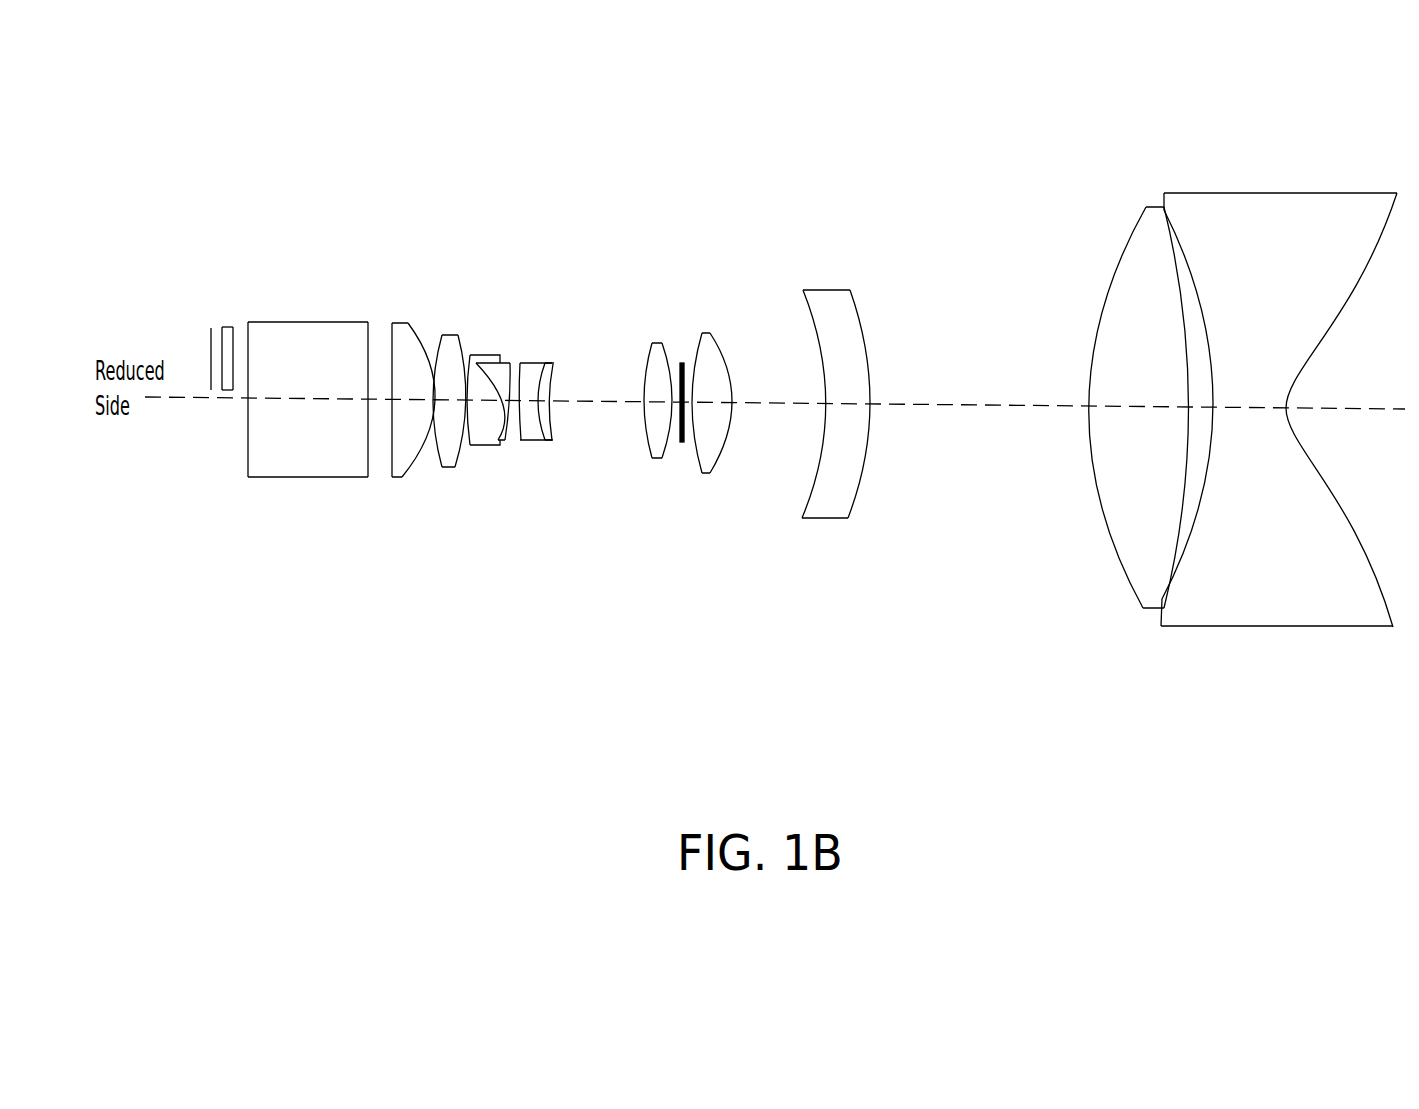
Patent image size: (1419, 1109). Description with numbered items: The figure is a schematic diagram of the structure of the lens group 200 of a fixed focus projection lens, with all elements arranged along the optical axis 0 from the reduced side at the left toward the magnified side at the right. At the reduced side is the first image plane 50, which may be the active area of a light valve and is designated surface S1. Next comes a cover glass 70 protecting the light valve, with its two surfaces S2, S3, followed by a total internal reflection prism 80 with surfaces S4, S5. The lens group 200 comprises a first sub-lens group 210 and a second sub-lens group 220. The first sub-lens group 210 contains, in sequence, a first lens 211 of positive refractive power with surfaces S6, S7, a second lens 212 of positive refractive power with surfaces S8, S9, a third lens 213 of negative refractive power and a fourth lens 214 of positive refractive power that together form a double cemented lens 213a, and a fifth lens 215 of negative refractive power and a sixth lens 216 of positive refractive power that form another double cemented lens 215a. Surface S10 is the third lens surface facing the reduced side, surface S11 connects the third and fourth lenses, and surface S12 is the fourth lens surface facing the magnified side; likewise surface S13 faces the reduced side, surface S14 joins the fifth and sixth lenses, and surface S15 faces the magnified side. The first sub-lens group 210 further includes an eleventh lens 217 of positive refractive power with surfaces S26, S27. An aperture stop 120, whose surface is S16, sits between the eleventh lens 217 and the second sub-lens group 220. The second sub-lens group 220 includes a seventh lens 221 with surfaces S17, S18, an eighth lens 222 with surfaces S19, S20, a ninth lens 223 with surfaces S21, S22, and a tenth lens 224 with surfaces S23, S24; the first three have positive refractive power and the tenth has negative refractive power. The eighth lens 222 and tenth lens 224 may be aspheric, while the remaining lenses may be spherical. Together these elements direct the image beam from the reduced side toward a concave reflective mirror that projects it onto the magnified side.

The optical axis 0 is at (1332, 408).
The first image plane 50 is at (178, 320).
The cover glass 70 is at (221, 320).
The total internal reflection prism 80 is at (266, 410).
The aperture stop 120 is at (693, 353).
The lens group 200 is at (1278, 722).
The first sub-lens group 210 is at (471, 441).
The first lens 211 is at (320, 410).
The second lens 212 is at (365, 410).
The third lens 213 is at (438, 386).
The fourth lens 214 is at (476, 405).
The double cemented lens 213a is at (449, 412).
The fifth lens 215 is at (541, 386).
The sixth lens 216 is at (586, 386).
The double cemented lens 215a is at (558, 412).
The eleventh lens 217 is at (660, 412).
The second sub-lens group 220 is at (1050, 401).
The seventh lens 221 is at (780, 415).
The eighth lens 222 is at (865, 415).
The ninth lens 223 is at (1072, 372).
The tenth lens 224 is at (1210, 372).
The surface S1 is at (210, 352).
The surface S2 is at (222, 340).
The surface S3 is at (235, 353).
The surface S4 is at (250, 377).
The surface S5 is at (367, 339).
The surface S6 is at (392, 347).
The surface S7 is at (418, 350).
The surface S8 is at (437, 348).
The surface S9 is at (460, 372).
The surface S10 is at (467, 360).
The surface S11 is at (487, 367).
The surface S12 is at (503, 387).
The surface S13 is at (527, 385).
The surface S14 is at (547, 380).
The surface S15 is at (552, 395).
The surface S16 is at (666, 437).
The surface S17 is at (702, 357).
The surface S18 is at (728, 373).
The surface S19 is at (820, 320).
The surface S20 is at (865, 335).
The surface S21 is at (1127, 240).
The surface S22 is at (1173, 257).
The surface S23 is at (1185, 253).
The surface S24 is at (1390, 230).
The surface S26 is at (645, 367).
The surface S27 is at (668, 358).